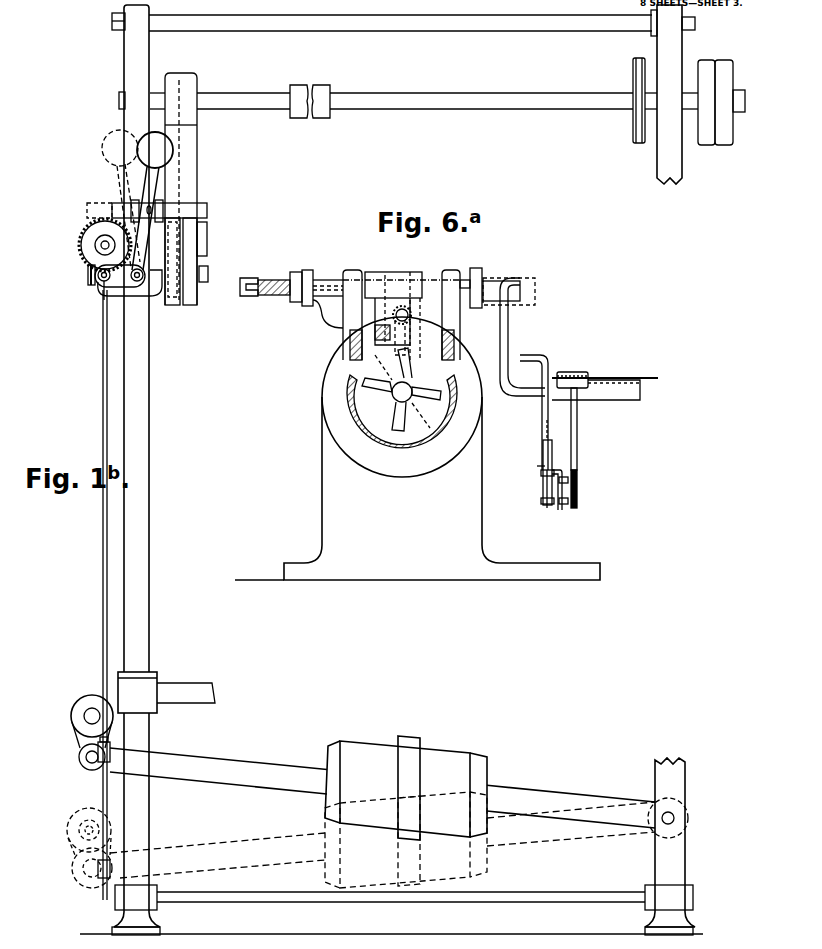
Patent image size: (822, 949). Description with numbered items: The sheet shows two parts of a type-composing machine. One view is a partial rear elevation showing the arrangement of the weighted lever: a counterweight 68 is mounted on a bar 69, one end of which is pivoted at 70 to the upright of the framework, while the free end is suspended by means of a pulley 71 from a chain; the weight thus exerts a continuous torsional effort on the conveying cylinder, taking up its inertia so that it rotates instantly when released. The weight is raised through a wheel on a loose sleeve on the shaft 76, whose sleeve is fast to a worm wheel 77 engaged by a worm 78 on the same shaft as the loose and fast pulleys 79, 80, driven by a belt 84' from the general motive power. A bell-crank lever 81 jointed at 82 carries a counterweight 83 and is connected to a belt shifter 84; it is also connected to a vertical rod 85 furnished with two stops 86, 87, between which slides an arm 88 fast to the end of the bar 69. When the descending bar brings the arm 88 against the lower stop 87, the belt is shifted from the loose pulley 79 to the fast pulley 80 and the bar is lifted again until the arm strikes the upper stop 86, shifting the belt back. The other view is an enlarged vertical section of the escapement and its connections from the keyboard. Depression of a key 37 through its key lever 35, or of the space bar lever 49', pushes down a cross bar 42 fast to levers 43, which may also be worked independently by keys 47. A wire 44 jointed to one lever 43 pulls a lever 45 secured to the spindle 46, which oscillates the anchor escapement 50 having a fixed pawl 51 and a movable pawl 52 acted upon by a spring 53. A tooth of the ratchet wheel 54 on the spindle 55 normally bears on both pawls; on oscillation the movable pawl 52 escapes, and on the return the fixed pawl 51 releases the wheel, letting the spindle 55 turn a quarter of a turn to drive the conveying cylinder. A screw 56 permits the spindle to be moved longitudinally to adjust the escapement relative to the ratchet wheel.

In FIG. 6A, the key lever 35 is at (578, 505).
In FIG. 6A, the key 37 is at (576, 369).
In FIG. 6A, the cross bar 42 is at (622, 385).
In FIG. 6A, the levers 43 is at (547, 506).
In FIG. 6A, the wire 44 is at (504, 340).
In FIG. 6A, the lever 45 is at (475, 278).
In FIG. 6A, the spindle 46 is at (322, 282).
In FIG. 6A, the keys 47 is at (537, 342).
In FIG. 6A, the space bar lever 49' is at (575, 511).
In FIG. 6A, the anchor escapement 50 is at (398, 280).
In FIG. 6A, the fixed pawl 51 is at (410, 320).
In FIG. 6A, the movable pawl 52 is at (400, 337).
In FIG. 6A, the spring 53 is at (360, 336).
In FIG. 6A, the ratchet wheel 54 is at (385, 400).
In FIG. 6A, the spindle 55 is at (412, 388).
In FIG. 6A, the screw 56 is at (250, 298).
In FIG. 1B, the counterweight 68 is at (406, 812).
In FIG. 1B, the bar 69 is at (382, 813).
In FIG. 1B, the pivot 70 is at (676, 818).
In FIG. 1B, the pulley 71 is at (72, 710).
In FIG. 1B, the shaft 76 is at (104, 247).
In FIG. 1B, the worm wheel 77 is at (80, 243).
In FIG. 1B, the worm 78 is at (89, 277).
In FIG. 1B, the loose pulley 79 is at (195, 306).
In FIG. 1B, the fast pulley 80 is at (172, 306).
In FIG. 1B, the bell-crank lever 81 is at (150, 185).
In FIG. 1B, the joint 82 is at (138, 283).
In FIG. 1B, the counterweight 83 is at (172, 150).
In FIG. 1B, the belt shifter 84 is at (222, 252).
In FIG. 1B, the belt 84' is at (205, 189).
In FIG. 1B, the vertical rod 85 is at (116, 410).
In FIG. 1B, the upper stop 86 is at (80, 757).
In FIG. 1B, the lower stop 87 is at (100, 870).
In FIG. 1B, the arm 88 is at (98, 765).